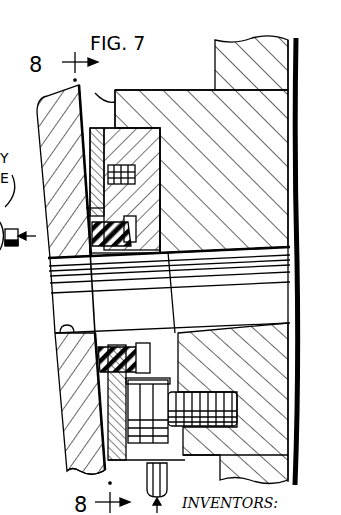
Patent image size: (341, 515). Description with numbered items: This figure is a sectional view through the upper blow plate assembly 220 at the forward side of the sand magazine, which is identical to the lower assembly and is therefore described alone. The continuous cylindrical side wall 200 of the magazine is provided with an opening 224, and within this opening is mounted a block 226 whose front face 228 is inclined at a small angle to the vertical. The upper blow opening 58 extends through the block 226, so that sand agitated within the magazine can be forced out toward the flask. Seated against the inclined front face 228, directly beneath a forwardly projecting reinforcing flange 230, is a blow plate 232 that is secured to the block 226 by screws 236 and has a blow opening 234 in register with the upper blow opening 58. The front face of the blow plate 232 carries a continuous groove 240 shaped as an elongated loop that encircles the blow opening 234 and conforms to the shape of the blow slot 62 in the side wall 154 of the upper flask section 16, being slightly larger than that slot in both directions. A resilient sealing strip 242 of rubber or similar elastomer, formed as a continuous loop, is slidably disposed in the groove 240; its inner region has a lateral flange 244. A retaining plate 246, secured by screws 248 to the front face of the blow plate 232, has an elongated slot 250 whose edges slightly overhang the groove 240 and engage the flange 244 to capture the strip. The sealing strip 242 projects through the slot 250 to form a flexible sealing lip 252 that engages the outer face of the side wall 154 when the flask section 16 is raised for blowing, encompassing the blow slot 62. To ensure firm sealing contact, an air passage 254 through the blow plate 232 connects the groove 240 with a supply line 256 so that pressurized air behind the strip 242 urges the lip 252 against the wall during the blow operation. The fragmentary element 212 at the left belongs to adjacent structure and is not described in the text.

The cope flask section 16 is at (50, 397).
The upper blow opening 58 is at (230, 248).
The blow slot 62 is at (60, 333).
The side wall 154 is at (118, 441).
The cylindrical side wall 200 is at (216, 64).
The adjacent element 212 is at (20, 228).
The blow plate assembly 220 is at (175, 178).
The opening 224 is at (241, 92).
The block 226 is at (260, 97).
The front face 228 is at (115, 118).
The reinforcing flange 230 is at (98, 89).
The blow plate 232 is at (162, 132).
The blow opening 234 is at (163, 244).
The screws 236 is at (222, 396).
The groove 240 is at (117, 218).
The resilient sealing strip 242 is at (98, 357).
The lateral flange 244 is at (100, 208).
The retaining plate 246 is at (66, 470).
The screws 248 is at (127, 165).
The elongated slot 250 is at (107, 260).
The flexible sealing lip 252 is at (92, 238).
The air passage 254 is at (180, 366).
The supply line 256 is at (168, 478).